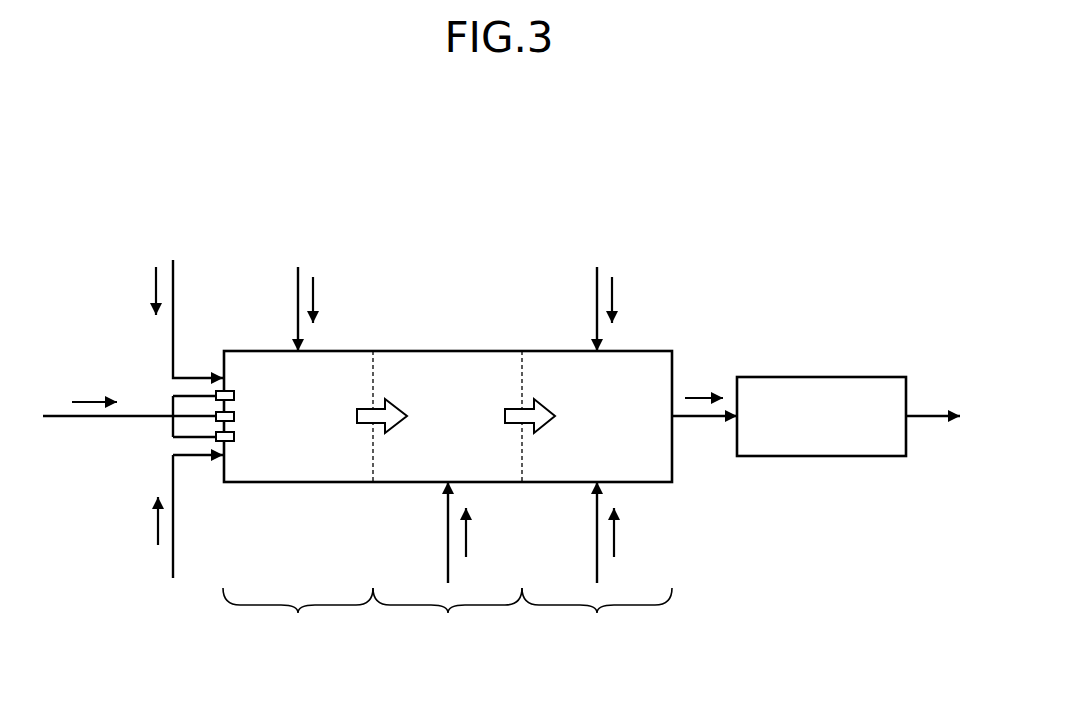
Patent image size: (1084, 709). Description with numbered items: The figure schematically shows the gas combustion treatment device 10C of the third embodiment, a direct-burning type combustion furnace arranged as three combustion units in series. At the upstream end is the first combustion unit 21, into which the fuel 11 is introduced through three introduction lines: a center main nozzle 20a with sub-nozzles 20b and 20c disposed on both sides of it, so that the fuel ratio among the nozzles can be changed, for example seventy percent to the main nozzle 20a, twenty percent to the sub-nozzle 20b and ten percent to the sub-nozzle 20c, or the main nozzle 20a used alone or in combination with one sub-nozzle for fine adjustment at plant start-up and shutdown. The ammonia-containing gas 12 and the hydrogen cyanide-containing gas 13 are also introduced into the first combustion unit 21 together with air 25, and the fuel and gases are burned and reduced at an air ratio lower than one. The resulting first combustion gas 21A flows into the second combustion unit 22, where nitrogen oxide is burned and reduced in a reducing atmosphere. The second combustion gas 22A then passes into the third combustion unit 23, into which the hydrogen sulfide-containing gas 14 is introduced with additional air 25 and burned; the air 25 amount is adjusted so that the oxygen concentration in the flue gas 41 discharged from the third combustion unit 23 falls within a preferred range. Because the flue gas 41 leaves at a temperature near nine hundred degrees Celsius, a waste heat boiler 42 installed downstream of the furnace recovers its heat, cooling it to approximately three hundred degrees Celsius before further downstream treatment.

The gas combustion treatment device 10C is at (466, 192).
The fuel 11 is at (93, 401).
The ammonia-containing gas 12 is at (157, 300).
The hydrogen cyanide-containing gas 13 is at (315, 290).
The hydrogen sulfide-containing gas 14 is at (612, 290).
The main nozzle 20a is at (234, 416).
The sub-nozzle 20b is at (225, 391).
The sub-nozzle 20c is at (234, 441).
The first combustion unit 21 is at (298, 616).
The second combustion unit 22 is at (447, 616).
The third combustion unit 23 is at (597, 616).
The first combustion gas 21A is at (380, 400).
The second combustion gas 22A is at (530, 400).
The air 25 is at (157, 530).
The flue gas 41 is at (705, 398).
The waste heat boiler 42 is at (838, 377).